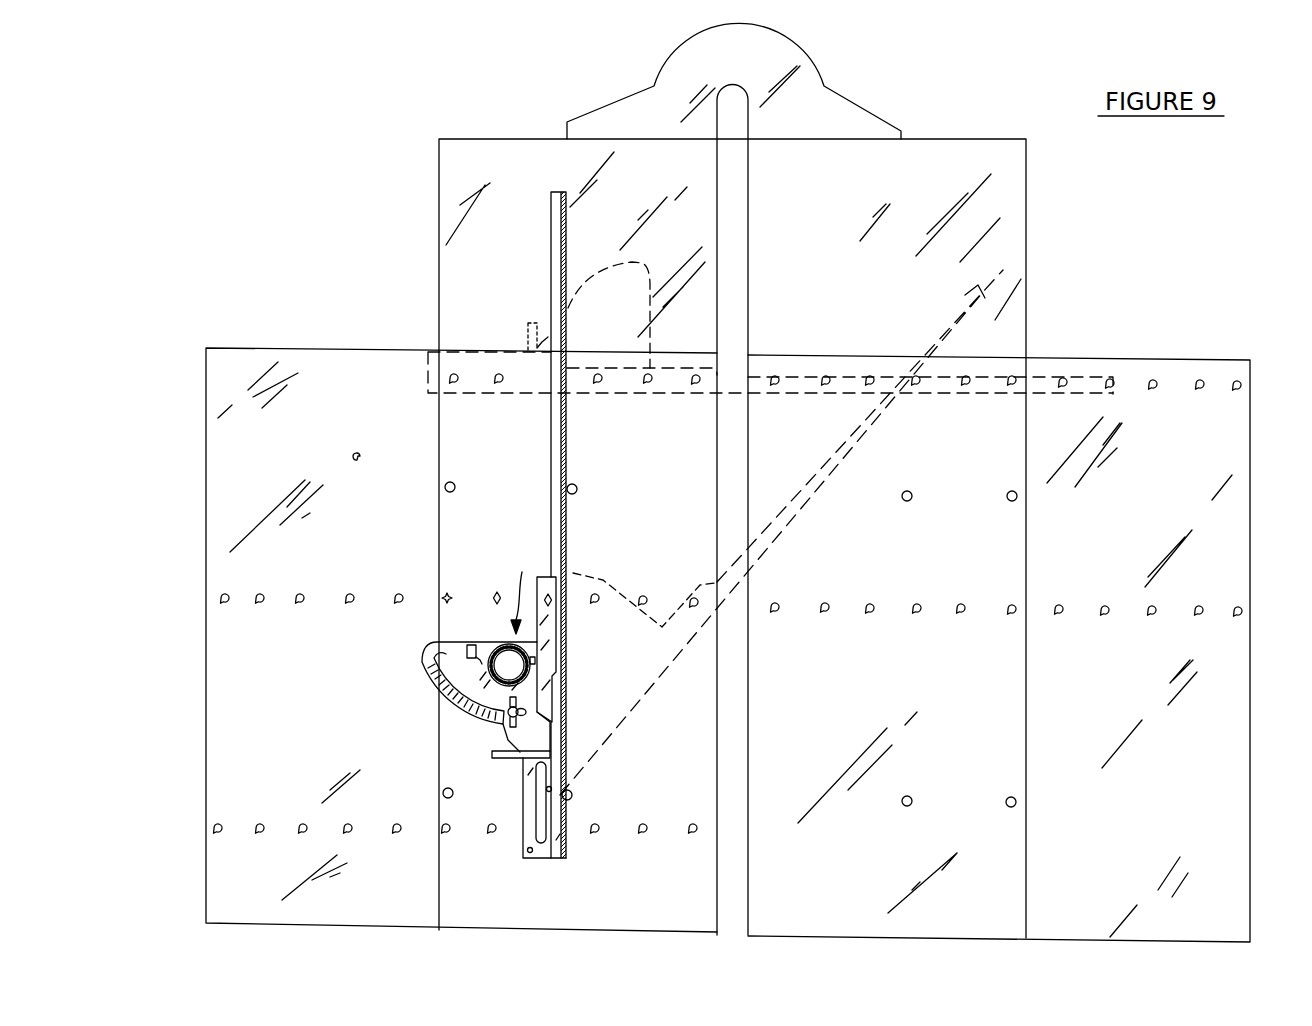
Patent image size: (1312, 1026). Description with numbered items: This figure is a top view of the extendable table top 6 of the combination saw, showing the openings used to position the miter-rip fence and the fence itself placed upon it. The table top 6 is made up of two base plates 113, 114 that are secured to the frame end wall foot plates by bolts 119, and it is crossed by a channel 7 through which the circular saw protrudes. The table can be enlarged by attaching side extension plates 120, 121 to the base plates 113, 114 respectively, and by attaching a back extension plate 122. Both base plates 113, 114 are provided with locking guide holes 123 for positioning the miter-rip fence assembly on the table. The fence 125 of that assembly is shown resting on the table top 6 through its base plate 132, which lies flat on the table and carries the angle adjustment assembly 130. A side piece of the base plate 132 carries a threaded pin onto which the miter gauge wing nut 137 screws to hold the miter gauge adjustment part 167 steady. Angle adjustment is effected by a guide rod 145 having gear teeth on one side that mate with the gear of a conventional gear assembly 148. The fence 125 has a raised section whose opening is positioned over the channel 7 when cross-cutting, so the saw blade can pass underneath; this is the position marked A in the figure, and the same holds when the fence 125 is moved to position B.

The table top 6 is at (1078, 260).
The channel 7 is at (738, 211).
The base plate 113 is at (468, 358).
The base plate 114 is at (1030, 388).
The bolts 119 is at (446, 489).
The side extension plate 120 is at (252, 358).
The side extension plate 121 is at (1173, 375).
The back extension plate 122 is at (940, 152).
The locking guide holes 123 is at (597, 596).
The fence 125 is at (558, 690).
The angle adjustment assembly 130 is at (400, 684).
The base plate 132 is at (532, 776).
The miter gauge wing nut 137 is at (507, 725).
The guide rod 145 is at (473, 645).
The gear assembly 148 is at (513, 591).
The miter gauge adjustment part 167 is at (462, 708).